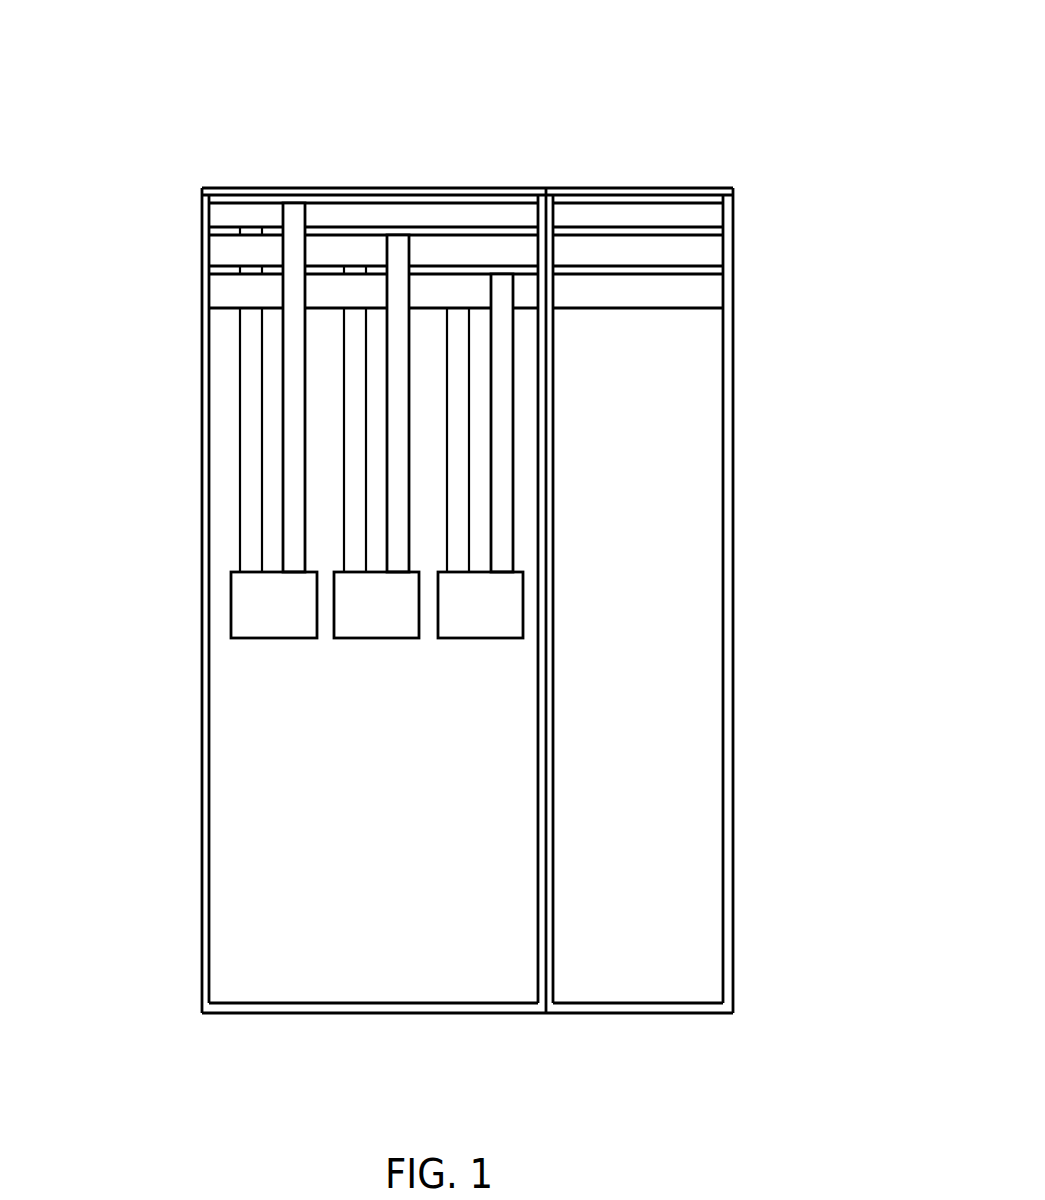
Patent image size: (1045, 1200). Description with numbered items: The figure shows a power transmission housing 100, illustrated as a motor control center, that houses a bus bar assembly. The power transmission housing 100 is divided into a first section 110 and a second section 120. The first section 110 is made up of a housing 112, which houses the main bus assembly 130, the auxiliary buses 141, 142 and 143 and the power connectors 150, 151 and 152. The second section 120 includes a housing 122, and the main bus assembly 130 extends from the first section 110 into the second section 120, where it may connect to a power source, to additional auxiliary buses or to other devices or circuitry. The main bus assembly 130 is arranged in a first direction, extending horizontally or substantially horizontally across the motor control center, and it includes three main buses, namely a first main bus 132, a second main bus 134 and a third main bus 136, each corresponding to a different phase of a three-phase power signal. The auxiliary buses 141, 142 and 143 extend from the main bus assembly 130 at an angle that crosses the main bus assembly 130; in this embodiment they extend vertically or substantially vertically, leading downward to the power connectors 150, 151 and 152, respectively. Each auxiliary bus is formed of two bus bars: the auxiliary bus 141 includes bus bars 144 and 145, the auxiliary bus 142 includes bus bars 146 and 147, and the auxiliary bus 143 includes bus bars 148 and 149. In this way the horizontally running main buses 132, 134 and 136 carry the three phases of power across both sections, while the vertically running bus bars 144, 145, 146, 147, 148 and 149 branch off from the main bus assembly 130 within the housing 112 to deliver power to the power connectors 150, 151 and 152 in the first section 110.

The power transmission housing 100 is at (623, 63).
The first section 110 is at (381, 1050).
The housing 112 is at (202, 797).
The second section 120 is at (649, 1055).
The housing 122 is at (733, 843).
The main bus assembly 130 is at (115, 192).
The first main bus 132 is at (220, 210).
The second main bus 134 is at (220, 248).
The third main bus 136 is at (220, 290).
The auxiliary bus 141 is at (109, 382).
The auxiliary bus 142 is at (109, 484).
The auxiliary bus 143 is at (628, 410).
The bus bar 144 is at (252, 390).
The bus bar 145 is at (293, 440).
The bus bar 146 is at (352, 488).
The bus bar 147 is at (397, 530).
The bus bar 148 is at (460, 420).
The bus bar 149 is at (502, 460).
The power connector 150 is at (269, 598).
The power connector 151 is at (377, 638).
The power connector 152 is at (480, 638).